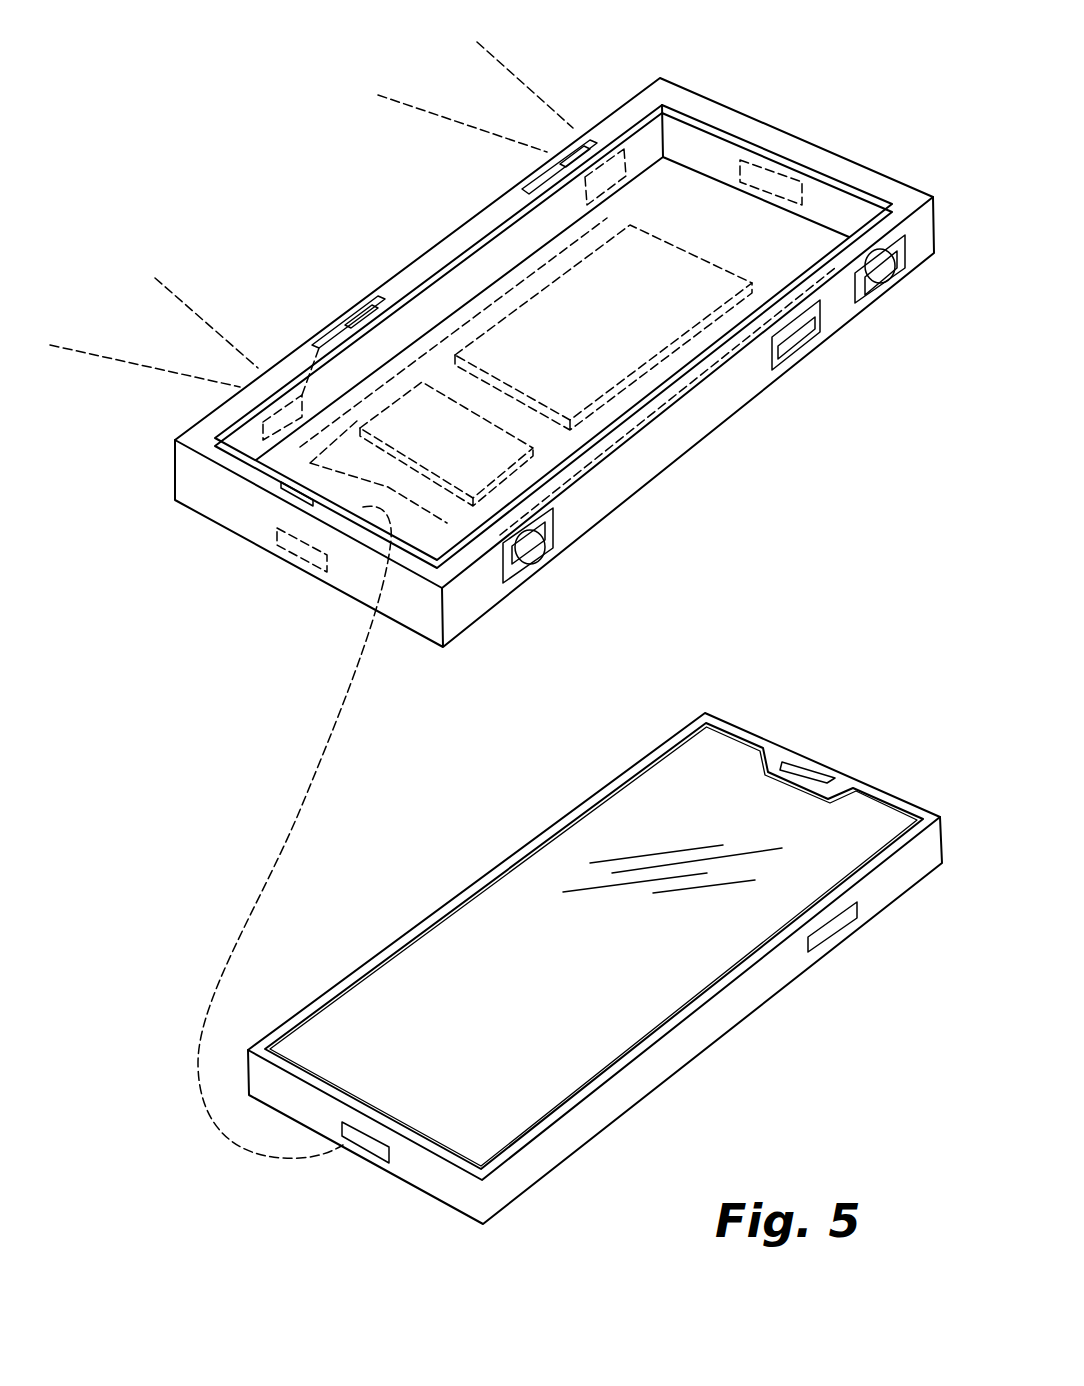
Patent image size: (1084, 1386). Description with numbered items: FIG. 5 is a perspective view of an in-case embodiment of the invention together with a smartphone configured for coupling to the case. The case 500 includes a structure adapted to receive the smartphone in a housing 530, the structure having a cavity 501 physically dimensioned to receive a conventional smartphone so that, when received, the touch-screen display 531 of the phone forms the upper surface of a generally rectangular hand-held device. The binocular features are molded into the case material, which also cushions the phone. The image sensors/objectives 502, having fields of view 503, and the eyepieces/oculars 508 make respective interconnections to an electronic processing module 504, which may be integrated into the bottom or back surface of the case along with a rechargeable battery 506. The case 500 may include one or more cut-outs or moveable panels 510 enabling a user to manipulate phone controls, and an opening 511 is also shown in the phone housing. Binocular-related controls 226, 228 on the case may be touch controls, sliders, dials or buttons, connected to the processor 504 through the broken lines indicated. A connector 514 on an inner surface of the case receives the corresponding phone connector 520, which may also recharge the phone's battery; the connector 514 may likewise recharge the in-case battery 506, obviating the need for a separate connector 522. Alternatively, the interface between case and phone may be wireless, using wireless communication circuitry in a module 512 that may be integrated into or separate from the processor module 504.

The case 500 is at (648, 476).
The cavity 501 is at (437, 298).
The binocular-related control 228 is at (545, 168).
The binocular-related control 226 is at (360, 298).
The fields of view 503 is at (306, 210).
The image sensors/objectives 502 is at (278, 393).
The electronic processing module 504 is at (446, 444).
The rechargeable battery 506 is at (603, 327).
The eyepieces/oculars 508 is at (890, 283).
The cut-outs or moveable panels 510 is at (812, 371).
The opening 511 is at (828, 938).
The wireless communication module 512 is at (288, 484).
The connector 514 is at (278, 545).
The phone connector 520 is at (373, 1150).
The connector 522 is at (760, 177).
The housing 530 is at (488, 862).
The touch-screen display 531 is at (654, 914).